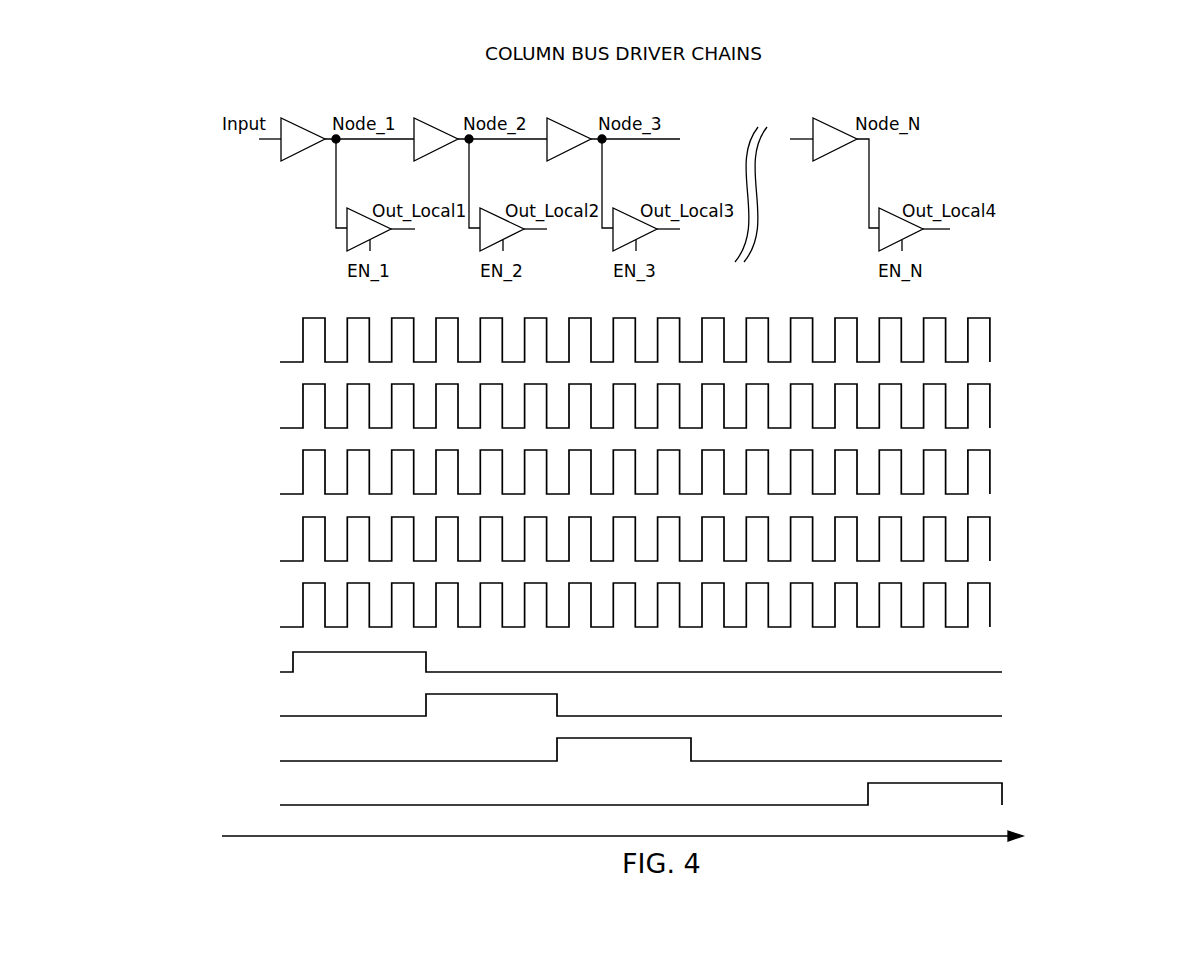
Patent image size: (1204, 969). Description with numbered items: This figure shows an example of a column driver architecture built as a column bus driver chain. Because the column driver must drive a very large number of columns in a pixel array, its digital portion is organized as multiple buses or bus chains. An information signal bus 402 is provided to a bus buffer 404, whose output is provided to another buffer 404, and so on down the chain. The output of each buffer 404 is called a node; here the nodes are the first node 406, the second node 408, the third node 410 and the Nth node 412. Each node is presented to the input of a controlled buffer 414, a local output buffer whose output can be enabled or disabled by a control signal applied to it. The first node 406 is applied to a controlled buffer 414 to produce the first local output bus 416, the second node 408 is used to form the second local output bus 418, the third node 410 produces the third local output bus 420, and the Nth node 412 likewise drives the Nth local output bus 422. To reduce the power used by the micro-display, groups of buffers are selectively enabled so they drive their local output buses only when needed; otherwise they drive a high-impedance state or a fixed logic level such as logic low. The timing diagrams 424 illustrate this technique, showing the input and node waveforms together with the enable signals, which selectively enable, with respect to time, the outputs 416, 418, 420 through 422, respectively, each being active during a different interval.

The information signal bus 402 is at (269, 142).
The bus buffer 404 is at (293, 125).
The Node_1 406 is at (336, 139).
The Node_2 408 is at (469, 139).
The Node_3 410 is at (602, 139).
The Node_N 412 is at (869, 140).
The controlled buffer 414 is at (348, 240).
The local output bus OUT_LOCAL_1 416 is at (403, 227).
The local output bus OUT_LOCAL_2 418 is at (540, 230).
The local output bus OUT_LOCAL_3 420 is at (675, 230).
The local output bus OUT_LOCAL_N 422 is at (935, 230).
The timing diagrams 424 is at (1074, 585).